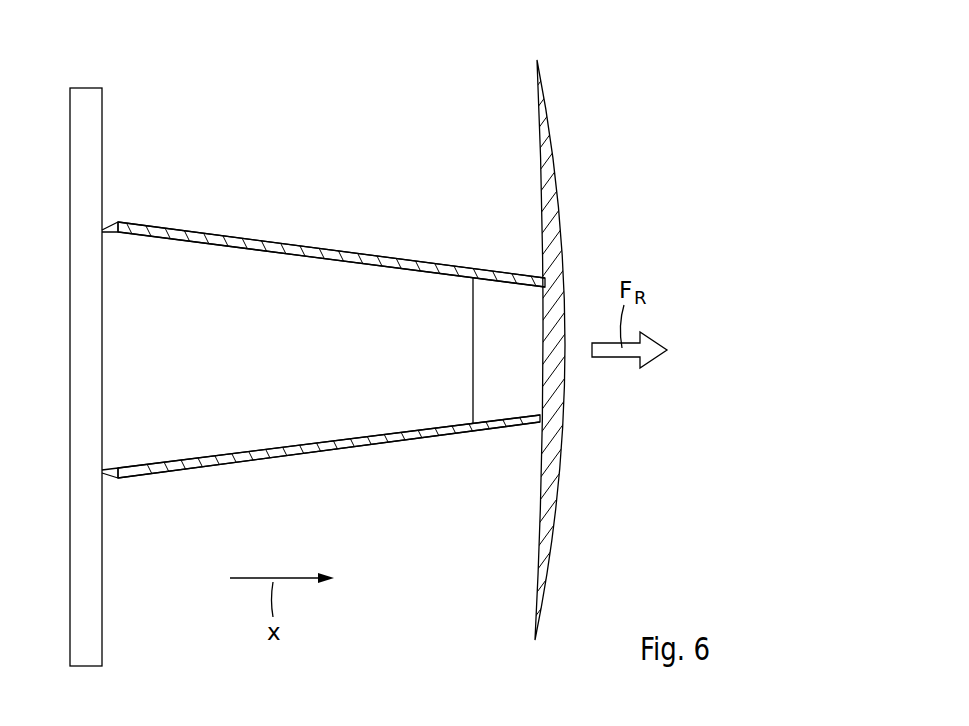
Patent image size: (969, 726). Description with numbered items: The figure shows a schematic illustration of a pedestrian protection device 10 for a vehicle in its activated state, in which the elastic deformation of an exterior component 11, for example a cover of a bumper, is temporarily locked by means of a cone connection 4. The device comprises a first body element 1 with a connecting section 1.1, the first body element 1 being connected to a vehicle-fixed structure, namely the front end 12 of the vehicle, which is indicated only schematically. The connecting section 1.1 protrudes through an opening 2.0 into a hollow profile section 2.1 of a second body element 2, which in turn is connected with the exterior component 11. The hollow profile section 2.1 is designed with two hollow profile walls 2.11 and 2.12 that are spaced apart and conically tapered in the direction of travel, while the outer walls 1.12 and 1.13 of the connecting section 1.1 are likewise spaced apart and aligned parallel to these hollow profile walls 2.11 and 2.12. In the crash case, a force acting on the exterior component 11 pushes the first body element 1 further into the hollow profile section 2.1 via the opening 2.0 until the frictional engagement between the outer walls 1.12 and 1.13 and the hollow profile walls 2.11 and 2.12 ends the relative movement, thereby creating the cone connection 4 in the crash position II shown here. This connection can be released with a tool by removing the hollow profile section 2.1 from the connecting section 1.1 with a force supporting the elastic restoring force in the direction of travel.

The front end 12 is at (87, 100).
The pedestrian protection device 10 is at (298, 138).
The hollow profile section 2.1 is at (201, 222).
The outer wall 1.12 is at (281, 244).
The hollow profile wall 2.11 is at (404, 258).
The hollow profile wall 2.12 is at (315, 457).
The outer wall 1.13 is at (203, 462).
The connecting section 1.1 is at (402, 448).
The cone connection 4 is at (450, 440).
The opening 2.0 is at (100, 473).
The first body element 1 is at (177, 360).
The second body element 2 is at (517, 365).
The exterior component 11 is at (553, 180).
The crash position II is at (382, 140).